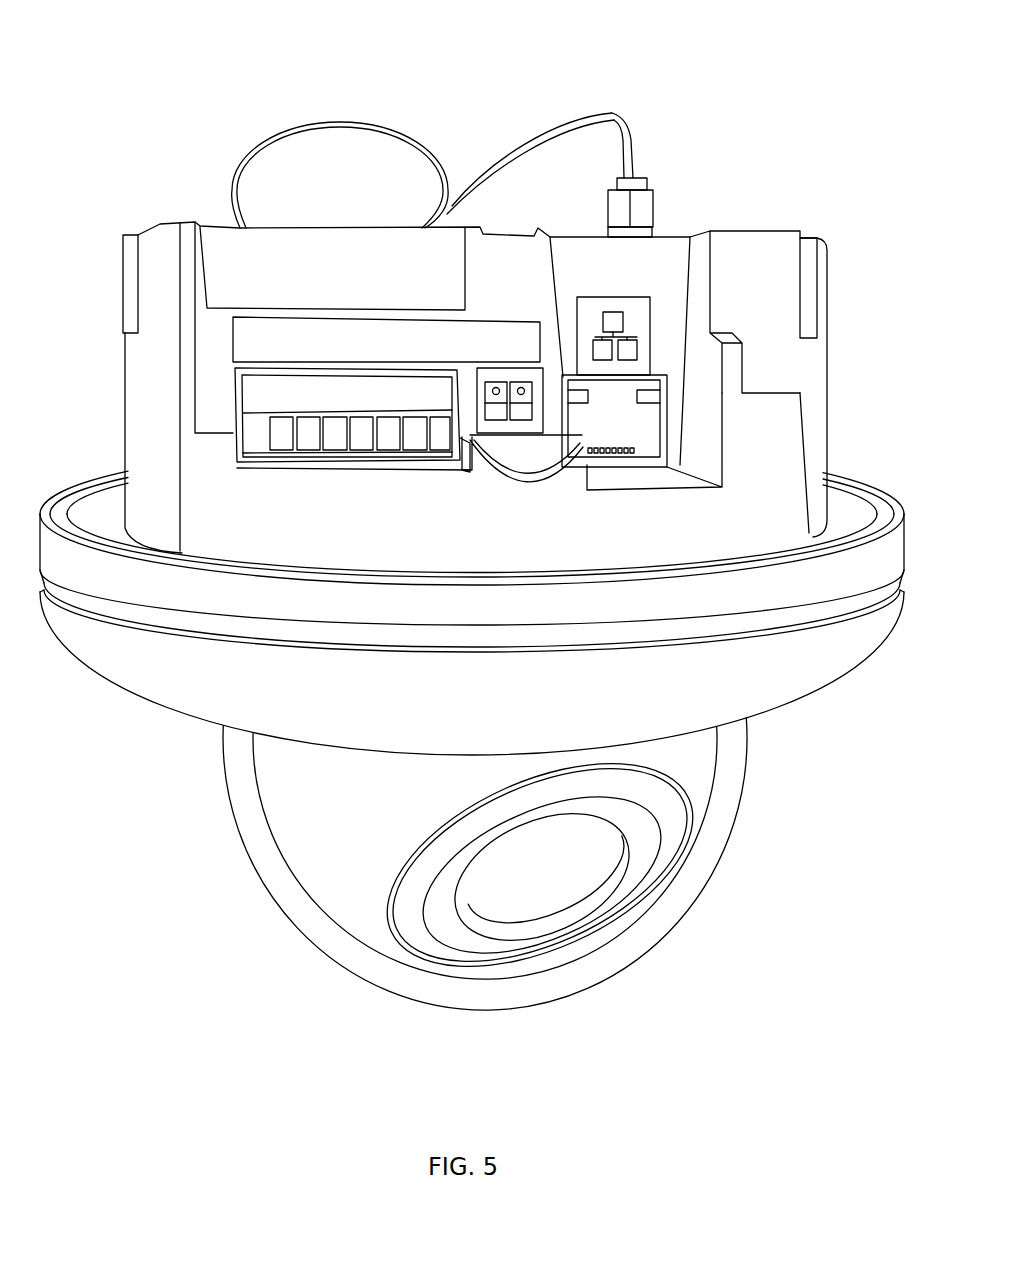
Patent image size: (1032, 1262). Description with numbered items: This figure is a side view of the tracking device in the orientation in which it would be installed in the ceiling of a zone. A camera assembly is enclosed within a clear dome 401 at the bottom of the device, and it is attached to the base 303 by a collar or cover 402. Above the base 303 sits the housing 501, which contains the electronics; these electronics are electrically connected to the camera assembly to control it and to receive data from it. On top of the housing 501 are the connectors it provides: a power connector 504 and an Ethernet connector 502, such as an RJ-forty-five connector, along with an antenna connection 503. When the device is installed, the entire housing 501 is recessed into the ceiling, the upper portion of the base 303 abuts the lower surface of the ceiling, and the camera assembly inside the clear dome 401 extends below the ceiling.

The housing 501 is at (177, 252).
The Ethernet connector 502 is at (603, 418).
The antenna connection 503 is at (623, 185).
The power connector 504 is at (265, 440).
The base 303 is at (100, 578).
The collar or cover 402 is at (778, 657).
The clear dome 401 is at (315, 948).